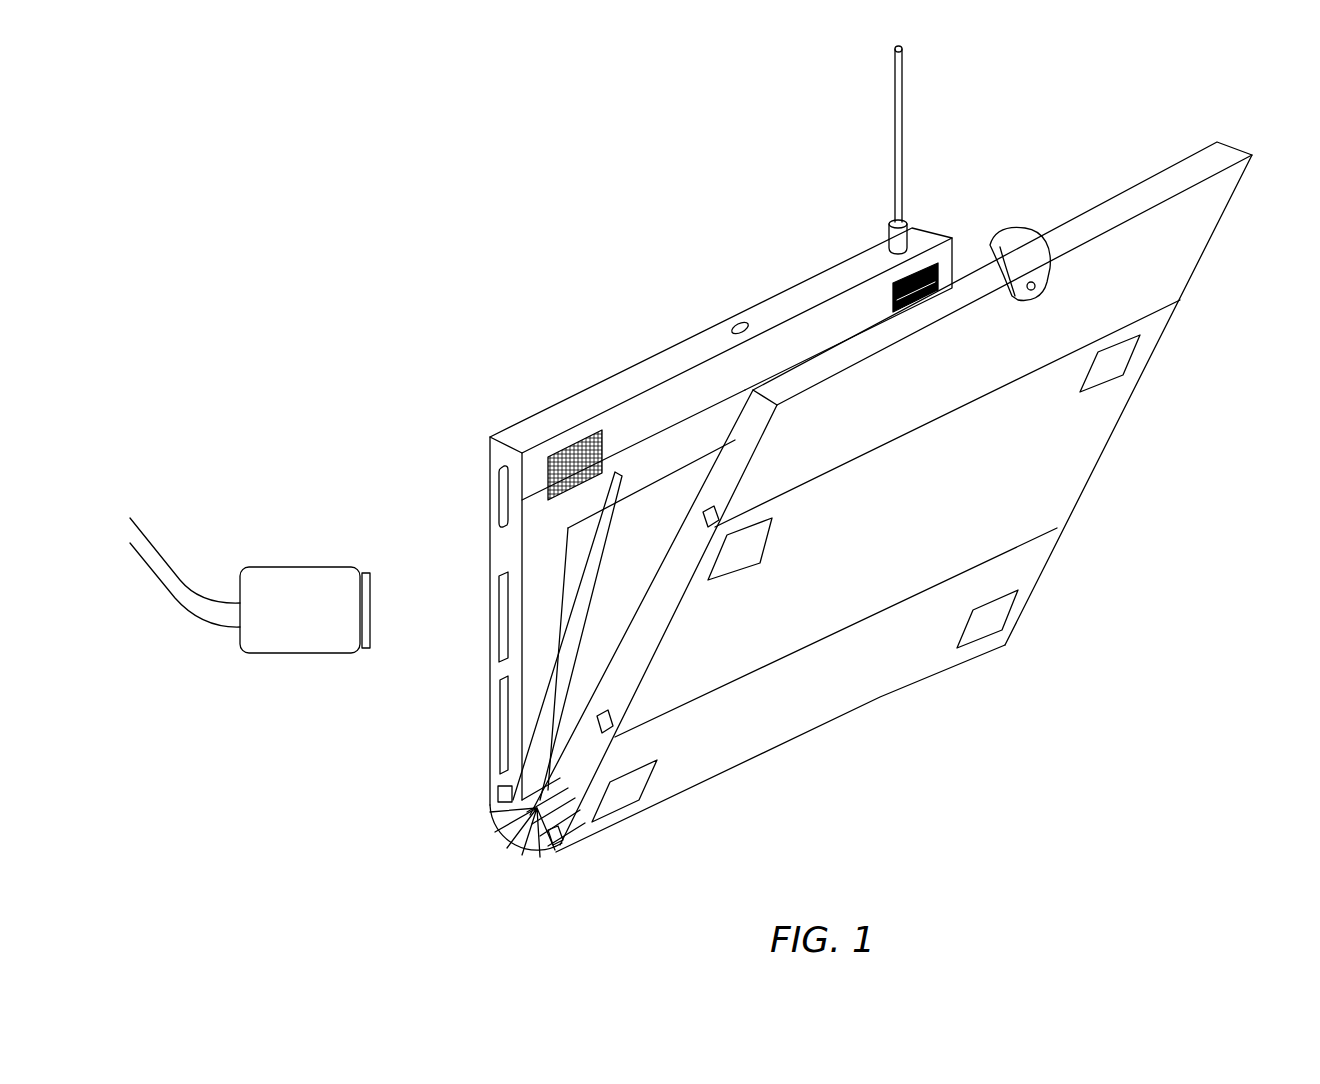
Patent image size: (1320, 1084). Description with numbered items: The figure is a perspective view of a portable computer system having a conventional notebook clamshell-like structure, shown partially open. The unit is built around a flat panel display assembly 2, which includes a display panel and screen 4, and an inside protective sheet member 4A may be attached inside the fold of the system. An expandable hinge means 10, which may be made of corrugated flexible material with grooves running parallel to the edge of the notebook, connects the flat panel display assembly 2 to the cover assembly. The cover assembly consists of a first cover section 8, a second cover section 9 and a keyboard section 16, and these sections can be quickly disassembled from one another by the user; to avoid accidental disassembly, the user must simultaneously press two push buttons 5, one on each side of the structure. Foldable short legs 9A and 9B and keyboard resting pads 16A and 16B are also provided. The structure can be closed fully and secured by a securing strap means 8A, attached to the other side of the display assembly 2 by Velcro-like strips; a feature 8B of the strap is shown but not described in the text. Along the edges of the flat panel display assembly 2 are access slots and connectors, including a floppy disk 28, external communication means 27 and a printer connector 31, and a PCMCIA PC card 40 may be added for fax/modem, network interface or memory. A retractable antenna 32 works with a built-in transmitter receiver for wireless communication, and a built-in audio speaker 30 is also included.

The flat panel display assembly 2 is at (640, 372).
The display panel and screen 4 is at (578, 532).
The inside protective sheet member 4A is at (535, 682).
The push buttons 5 is at (705, 510).
The first cover section 8 is at (1178, 252).
The securing strap means 8A is at (1023, 250).
The clamp hole 8B is at (1033, 289).
The second cover section 9 is at (862, 678).
The foldable short leg 9A is at (628, 793).
The foldable short leg 9B is at (985, 622).
The expandable hinge means 10 is at (495, 840).
The keyboard section 16 is at (1062, 468).
The keyboard resting pad 16A is at (742, 548).
The keyboard resting pad 16B is at (1110, 362).
The external communication means 27 is at (505, 622).
The floppy disk 28 is at (505, 698).
The built-in audio speaker 30 is at (580, 450).
The printer connector 31 is at (503, 508).
The retractable antenna 32 is at (902, 87).
The PCMCIA PC card 40 is at (313, 592).